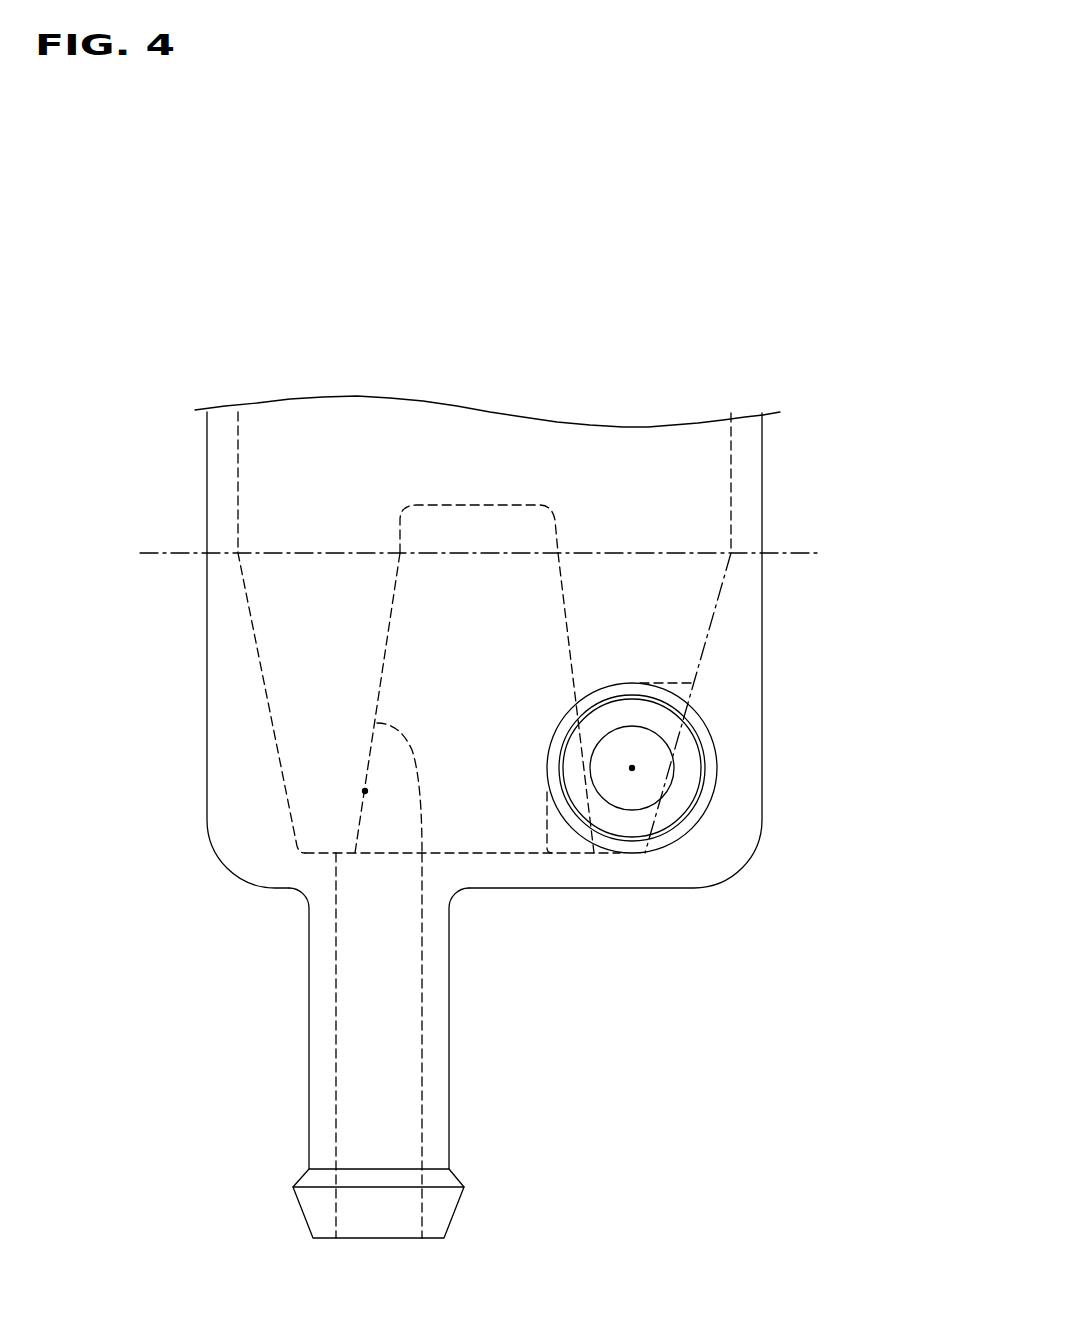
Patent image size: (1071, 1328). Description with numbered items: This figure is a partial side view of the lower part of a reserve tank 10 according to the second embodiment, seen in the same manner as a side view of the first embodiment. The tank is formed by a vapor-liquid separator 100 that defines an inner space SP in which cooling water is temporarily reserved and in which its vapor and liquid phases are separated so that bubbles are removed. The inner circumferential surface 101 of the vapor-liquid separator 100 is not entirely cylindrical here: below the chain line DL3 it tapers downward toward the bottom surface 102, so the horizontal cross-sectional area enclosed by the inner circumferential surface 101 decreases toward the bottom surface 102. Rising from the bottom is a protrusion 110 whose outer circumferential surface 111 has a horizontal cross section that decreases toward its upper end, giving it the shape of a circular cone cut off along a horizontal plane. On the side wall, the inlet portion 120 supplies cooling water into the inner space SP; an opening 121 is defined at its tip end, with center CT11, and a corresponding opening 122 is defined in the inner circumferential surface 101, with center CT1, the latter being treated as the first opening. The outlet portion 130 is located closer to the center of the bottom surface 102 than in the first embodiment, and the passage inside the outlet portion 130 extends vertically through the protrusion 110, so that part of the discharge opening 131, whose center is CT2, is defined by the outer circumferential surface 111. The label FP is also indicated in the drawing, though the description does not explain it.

The reserve tank 10 is at (846, 353).
The vapor-liquid separator 100 is at (762, 487).
The inner circumferential surface 101 is at (238, 437).
The bottom surface 102 is at (500, 830).
The protrusion 110 is at (615, 608).
The outer circumferential surface 111 is at (563, 605).
The inlet portion 120 is at (685, 792).
The opening 121 is at (763, 766).
The opening 122 is at (652, 753).
The outlet portion 130 is at (449, 1053).
The opening 131 is at (367, 751).
The center of the opening 122 CT1 is at (734, 862).
The center of the opening 121 CT11 is at (632, 768).
The center of the opening 131 CT2 is at (365, 791).
The chain line DL3 is at (155, 553).
The flat portion FP is at (297, 720).
The inner space SP is at (470, 455).